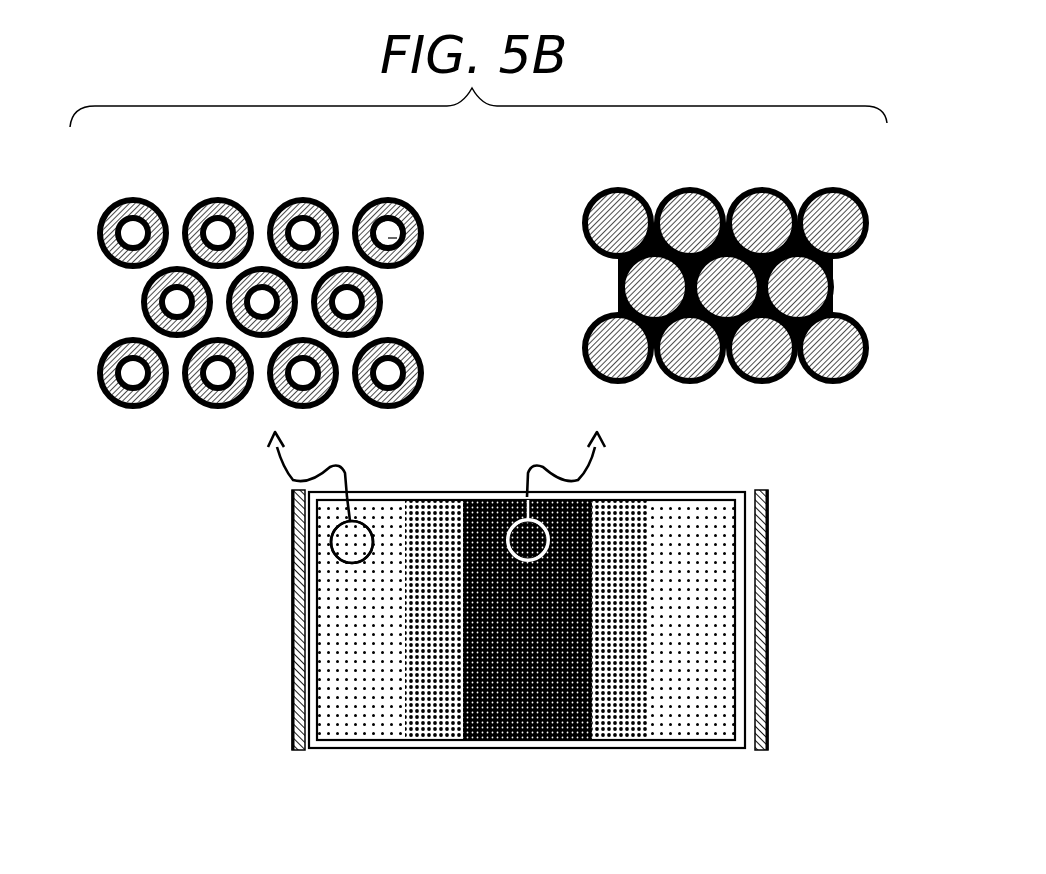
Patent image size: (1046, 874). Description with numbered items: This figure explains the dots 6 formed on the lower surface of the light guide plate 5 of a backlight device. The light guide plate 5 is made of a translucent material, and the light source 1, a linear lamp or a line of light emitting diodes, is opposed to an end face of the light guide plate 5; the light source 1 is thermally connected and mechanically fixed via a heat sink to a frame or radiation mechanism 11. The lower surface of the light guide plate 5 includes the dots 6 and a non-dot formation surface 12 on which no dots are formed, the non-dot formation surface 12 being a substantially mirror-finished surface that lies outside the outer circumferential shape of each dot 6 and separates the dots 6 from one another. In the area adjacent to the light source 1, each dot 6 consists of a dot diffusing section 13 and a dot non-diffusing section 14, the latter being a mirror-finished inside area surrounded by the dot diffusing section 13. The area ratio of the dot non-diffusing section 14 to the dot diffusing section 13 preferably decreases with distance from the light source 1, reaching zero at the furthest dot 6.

The light source 1 is at (750, 487).
The light guide plate 5 is at (503, 750).
The dots 6 is at (486, 210).
The radiation mechanism 11 is at (293, 603).
The non-dot formation surface 12 is at (347, 253).
The dot diffusing section 13 is at (424, 227).
The dot non-diffusing section 14 is at (422, 245).